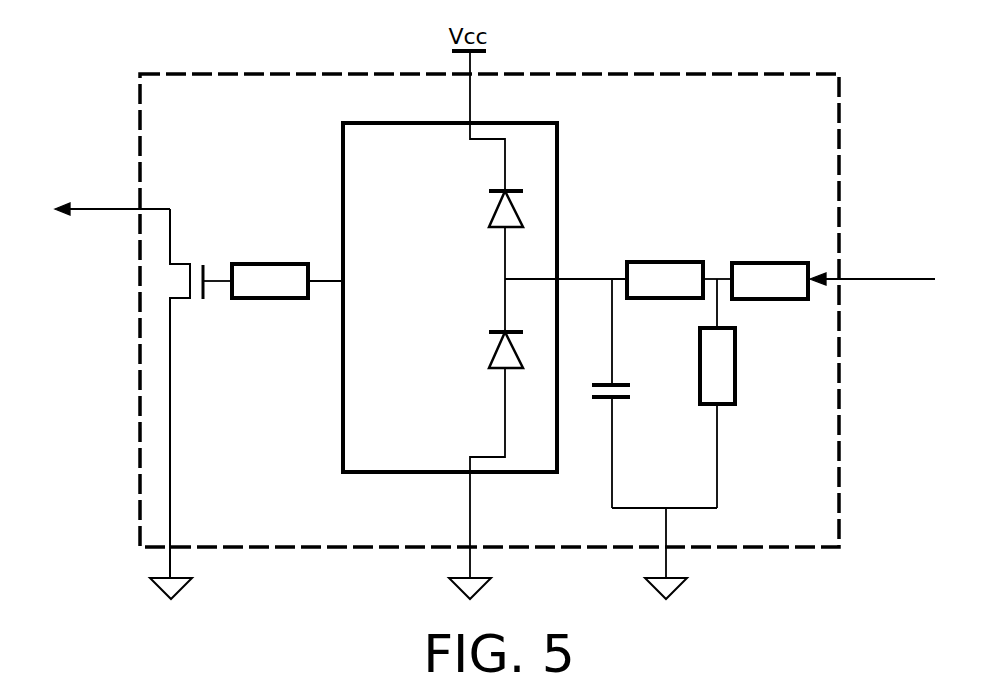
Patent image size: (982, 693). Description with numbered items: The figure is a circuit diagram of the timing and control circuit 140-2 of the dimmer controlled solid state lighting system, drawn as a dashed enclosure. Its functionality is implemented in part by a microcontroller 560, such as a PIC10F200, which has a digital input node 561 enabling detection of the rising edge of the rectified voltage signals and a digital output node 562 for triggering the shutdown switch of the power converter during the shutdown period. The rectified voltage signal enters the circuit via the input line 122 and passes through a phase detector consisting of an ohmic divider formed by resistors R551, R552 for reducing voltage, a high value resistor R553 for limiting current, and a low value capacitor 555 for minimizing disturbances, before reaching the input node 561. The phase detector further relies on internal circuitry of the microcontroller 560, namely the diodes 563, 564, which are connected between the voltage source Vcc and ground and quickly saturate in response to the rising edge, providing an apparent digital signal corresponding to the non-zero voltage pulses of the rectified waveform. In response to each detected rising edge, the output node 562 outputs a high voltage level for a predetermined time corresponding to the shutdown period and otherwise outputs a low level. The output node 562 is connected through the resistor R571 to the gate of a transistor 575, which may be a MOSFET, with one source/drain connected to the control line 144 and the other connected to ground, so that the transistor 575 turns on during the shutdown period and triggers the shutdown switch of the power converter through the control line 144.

The timing and control circuit 140-2 is at (822, 106).
The microcontroller 560 is at (357, 162).
The diode 563 is at (490, 206).
The diode 564 is at (490, 346).
The digital input node 561 is at (565, 278).
The digital output node 562 is at (338, 280).
The transistor 575 is at (197, 261).
The control line 144 is at (86, 207).
The input line 122 is at (880, 278).
The capacitor 555 is at (636, 390).
The resistor R571 is at (255, 281).
The resistor R553 is at (679, 280).
The resistor R551 is at (770, 281).
The resistor R552 is at (717, 393).